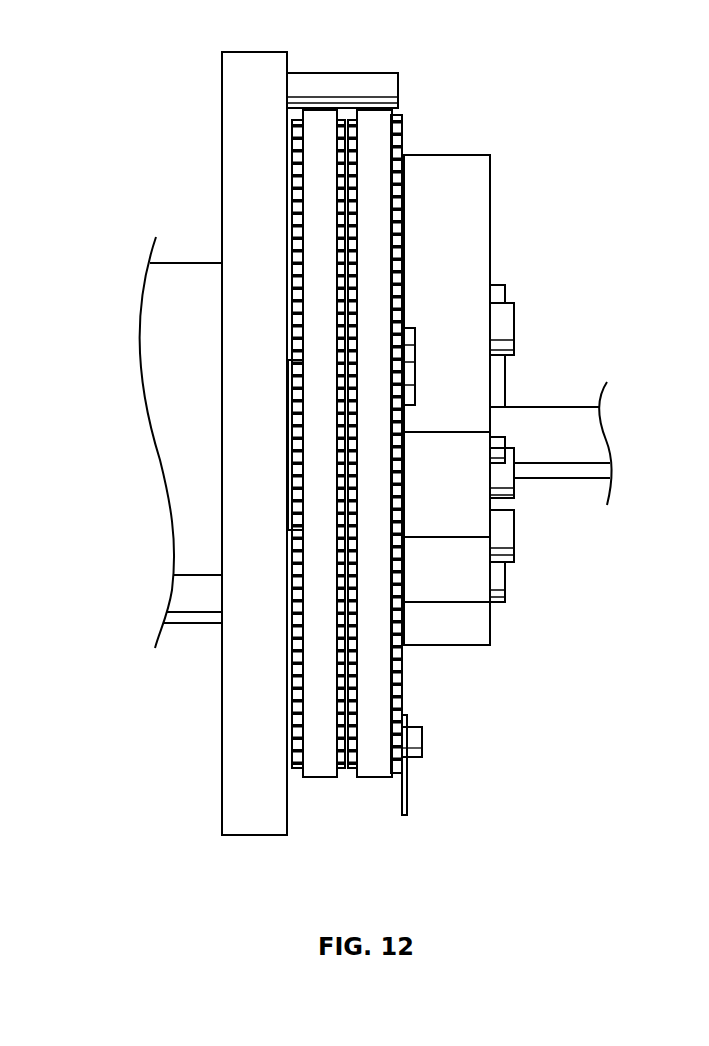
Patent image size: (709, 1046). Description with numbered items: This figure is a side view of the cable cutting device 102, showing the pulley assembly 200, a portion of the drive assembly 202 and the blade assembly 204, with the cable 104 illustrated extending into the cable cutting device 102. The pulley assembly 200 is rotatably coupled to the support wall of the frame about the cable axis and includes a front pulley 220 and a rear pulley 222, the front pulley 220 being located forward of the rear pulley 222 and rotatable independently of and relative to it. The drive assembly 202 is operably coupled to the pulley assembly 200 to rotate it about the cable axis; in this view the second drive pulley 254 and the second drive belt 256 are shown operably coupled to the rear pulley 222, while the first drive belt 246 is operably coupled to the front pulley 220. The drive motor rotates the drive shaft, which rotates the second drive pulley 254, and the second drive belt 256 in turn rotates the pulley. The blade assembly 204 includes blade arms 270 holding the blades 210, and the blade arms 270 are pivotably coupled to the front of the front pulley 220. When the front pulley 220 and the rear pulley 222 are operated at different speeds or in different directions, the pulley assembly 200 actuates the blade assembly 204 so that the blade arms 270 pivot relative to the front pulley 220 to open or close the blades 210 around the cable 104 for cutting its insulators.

The cable cutting device 102 is at (508, 140).
The cable 104 is at (572, 408).
The pulley assembly 200 is at (396, 130).
The drive assembly 202 is at (193, 620).
The blade assembly 204 is at (447, 156).
The blades 210 is at (496, 368).
The front pulley 220 is at (398, 740).
The rear pulley 222 is at (293, 770).
The first drive belt 246 is at (373, 695).
The second drive pulley 254 is at (299, 484).
The second drive belt 256 is at (320, 752).
The blade arms 270 is at (455, 285).